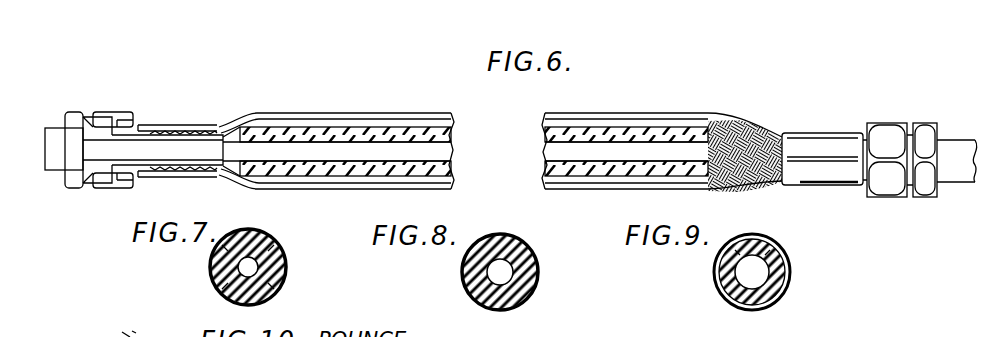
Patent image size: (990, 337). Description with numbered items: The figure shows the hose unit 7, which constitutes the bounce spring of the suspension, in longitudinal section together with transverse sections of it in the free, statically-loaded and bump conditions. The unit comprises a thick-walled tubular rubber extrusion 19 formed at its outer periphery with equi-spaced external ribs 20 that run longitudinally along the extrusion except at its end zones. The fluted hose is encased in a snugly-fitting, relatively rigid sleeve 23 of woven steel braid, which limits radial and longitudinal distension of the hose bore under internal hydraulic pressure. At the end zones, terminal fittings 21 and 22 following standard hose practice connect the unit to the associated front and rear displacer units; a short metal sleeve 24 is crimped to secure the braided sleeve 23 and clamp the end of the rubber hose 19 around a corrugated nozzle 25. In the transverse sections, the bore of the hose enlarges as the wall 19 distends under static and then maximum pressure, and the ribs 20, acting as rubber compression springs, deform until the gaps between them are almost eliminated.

In FIG. 6, the hose unit 7 is at (600, 118).
In FIG. 7, the hose unit 7 is at (293, 281).
In FIG. 8, the hose unit 7 is at (546, 257).
In FIG. 9, the hose unit 7 is at (797, 267).
In FIG. 6, the tubular rubber extrusion 19 is at (384, 137).
In FIG. 7, the tubular rubber extrusion 19 is at (265, 258).
In FIG. 8, the tubular rubber extrusion 19 is at (478, 273).
In FIG. 9, the tubular rubber extrusion 19 is at (784, 285).
In FIG. 7, the external ribs 20 is at (278, 246).
In FIG. 9, the external ribs 20 is at (768, 252).
In FIG. 6, the terminal fitting 21 is at (939, 137).
In FIG. 6, the terminal fitting 22 is at (73, 116).
In FIG. 6, the sleeve 23 is at (727, 124).
In FIG. 7, the sleeve 23 is at (258, 298).
In FIG. 8, the sleeve 23 is at (533, 287).
In FIG. 9, the sleeve 23 is at (718, 275).
In FIG. 6, the metal sleeve 24 is at (183, 178).
In FIG. 6, the corrugated nozzle 25 is at (178, 132).